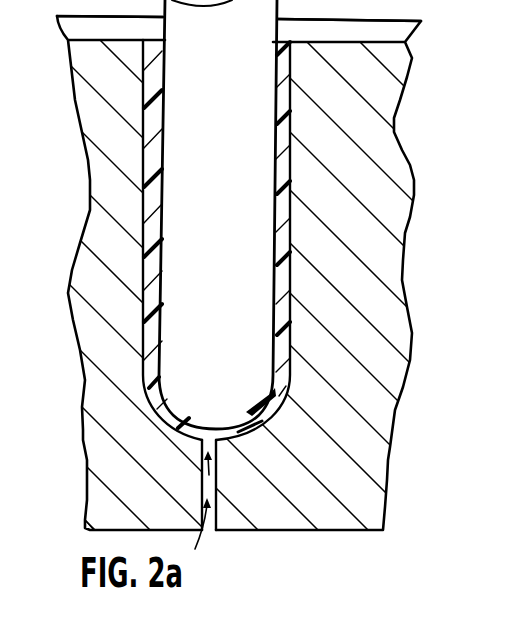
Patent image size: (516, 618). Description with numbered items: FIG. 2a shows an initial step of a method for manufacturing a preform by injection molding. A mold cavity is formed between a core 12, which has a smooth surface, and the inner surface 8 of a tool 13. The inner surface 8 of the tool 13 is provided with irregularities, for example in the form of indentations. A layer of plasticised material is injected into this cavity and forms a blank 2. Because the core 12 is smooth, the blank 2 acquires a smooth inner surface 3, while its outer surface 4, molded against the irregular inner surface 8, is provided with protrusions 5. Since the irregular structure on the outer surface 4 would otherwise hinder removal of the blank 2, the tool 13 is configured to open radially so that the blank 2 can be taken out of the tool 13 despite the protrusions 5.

The blank 2 is at (278, 289).
The inner surface 3 is at (160, 317).
The outer surface 4 is at (292, 332).
The protrusions 5 is at (292, 96).
The inner surface 8 is at (280, 405).
The core 12 is at (193, 175).
The tool 13 is at (373, 222).